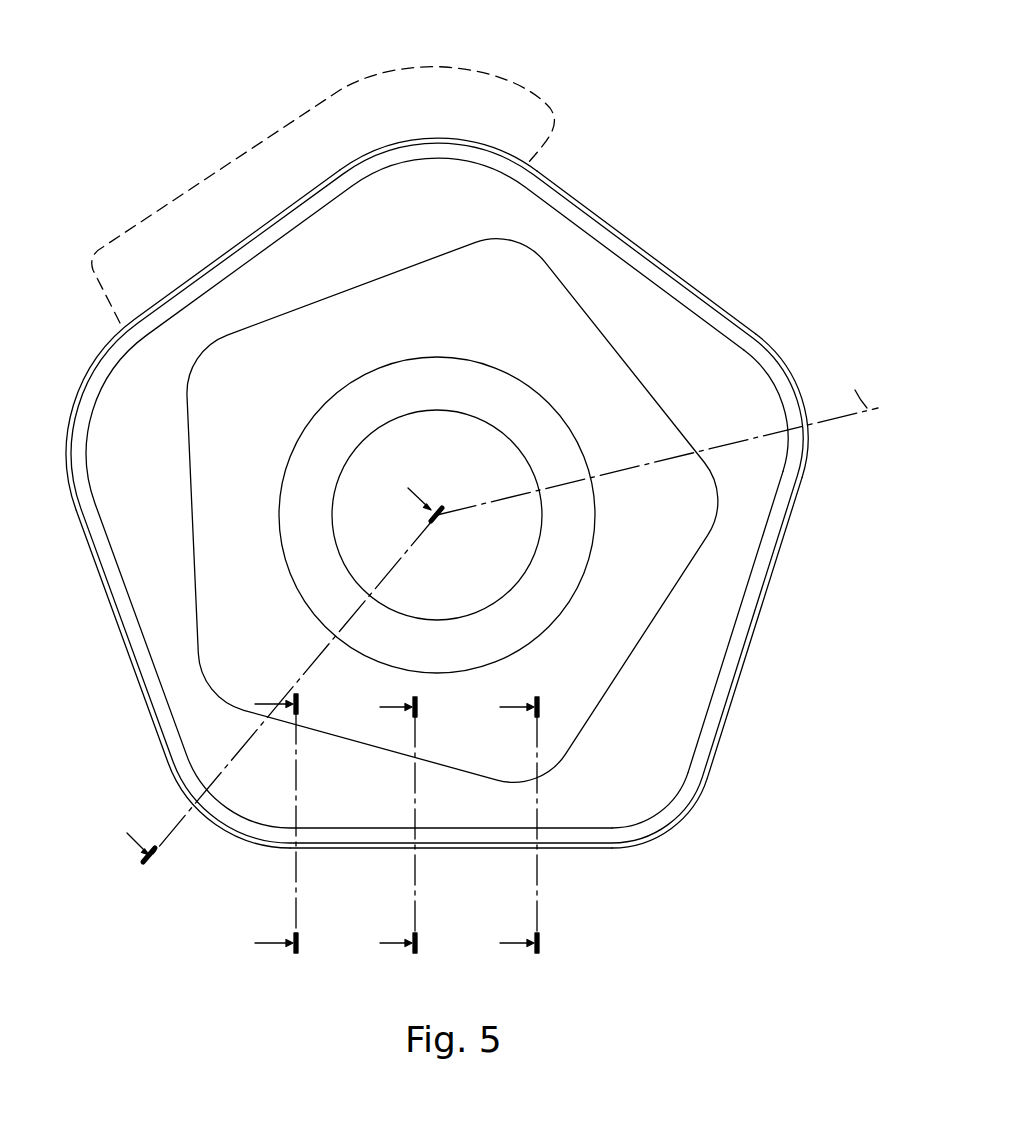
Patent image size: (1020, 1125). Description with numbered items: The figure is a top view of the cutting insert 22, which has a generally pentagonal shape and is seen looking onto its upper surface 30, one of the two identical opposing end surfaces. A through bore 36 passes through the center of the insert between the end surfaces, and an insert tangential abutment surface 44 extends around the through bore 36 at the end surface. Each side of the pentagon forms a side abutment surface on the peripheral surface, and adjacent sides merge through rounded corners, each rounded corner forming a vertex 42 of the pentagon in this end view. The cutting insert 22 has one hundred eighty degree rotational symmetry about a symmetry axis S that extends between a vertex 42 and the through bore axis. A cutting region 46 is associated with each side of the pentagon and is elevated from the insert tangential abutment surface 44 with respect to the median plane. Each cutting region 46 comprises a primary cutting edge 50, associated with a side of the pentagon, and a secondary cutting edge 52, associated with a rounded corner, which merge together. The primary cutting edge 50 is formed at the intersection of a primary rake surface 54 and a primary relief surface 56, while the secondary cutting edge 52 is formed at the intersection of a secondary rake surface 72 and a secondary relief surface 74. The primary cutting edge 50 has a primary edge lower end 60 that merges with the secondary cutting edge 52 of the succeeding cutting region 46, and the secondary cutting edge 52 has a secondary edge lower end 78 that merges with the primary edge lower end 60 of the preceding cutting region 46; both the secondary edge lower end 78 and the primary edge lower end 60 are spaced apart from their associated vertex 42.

The cutting insert 22 is at (469, 483).
The upper surface 30 is at (740, 551).
The through bore 36 is at (434, 410).
The vertex 42 is at (637, 835).
The insert tangential abutment surface 44 is at (525, 278).
The cutting region 46 is at (463, 68).
The primary cutting edge 50 is at (678, 277).
The secondary cutting edge 52 is at (758, 341).
The primary rake surface 54 is at (695, 670).
The primary relief surface 56 is at (735, 692).
The primary edge lower end 60 is at (120, 330).
The secondary rake surface 72 is at (657, 766).
The secondary relief surface 74 is at (713, 747).
The secondary edge lower end 78 is at (528, 163).